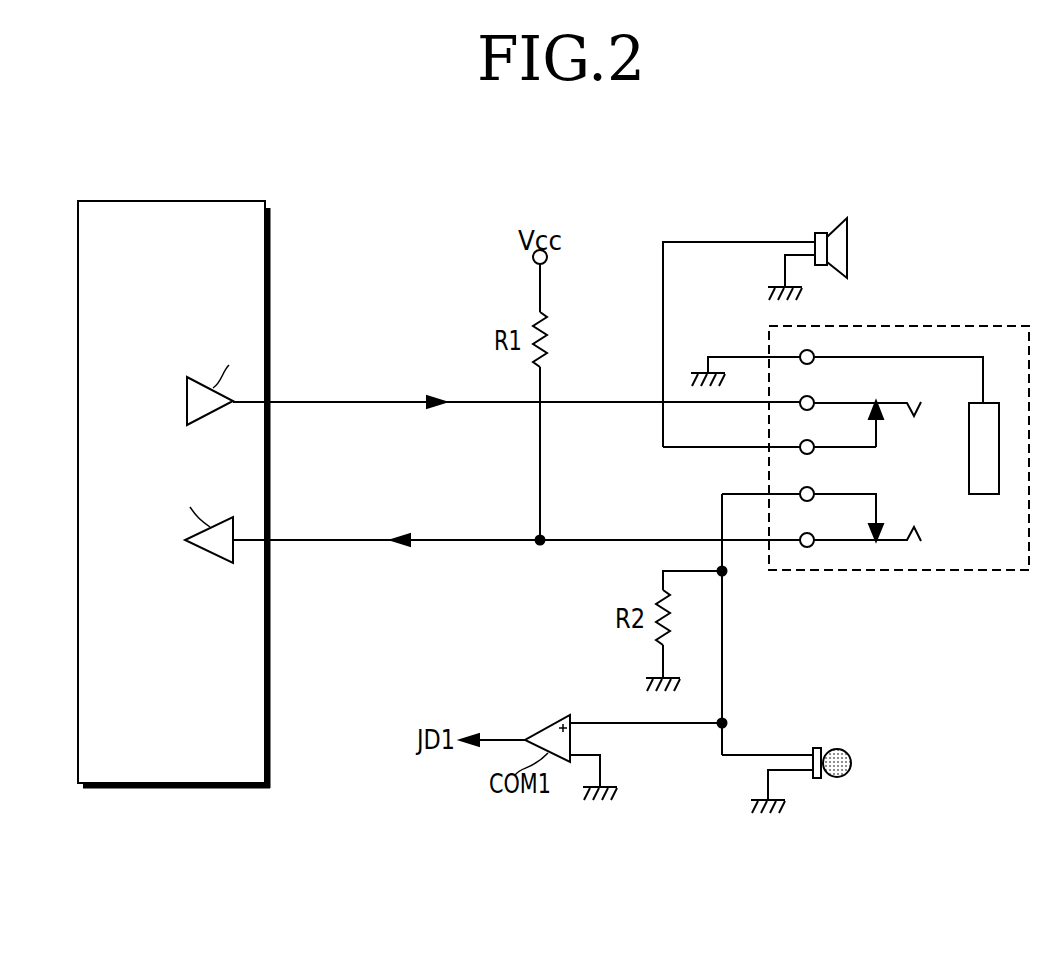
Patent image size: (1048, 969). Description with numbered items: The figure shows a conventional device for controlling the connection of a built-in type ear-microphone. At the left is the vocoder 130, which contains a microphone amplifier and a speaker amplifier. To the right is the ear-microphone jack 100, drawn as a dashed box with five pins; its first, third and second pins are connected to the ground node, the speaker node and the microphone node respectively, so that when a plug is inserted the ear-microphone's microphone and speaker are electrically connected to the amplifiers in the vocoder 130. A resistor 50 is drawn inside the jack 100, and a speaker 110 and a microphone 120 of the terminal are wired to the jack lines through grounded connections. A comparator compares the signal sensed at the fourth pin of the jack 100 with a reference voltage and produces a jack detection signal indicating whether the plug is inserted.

The vocoder 130 is at (170, 201).
The speaker 110 is at (850, 245).
The ear-microphone jack 100 is at (999, 326).
The resistor (earphone plug load) 50 is at (984, 494).
The microphone 120 is at (852, 764).